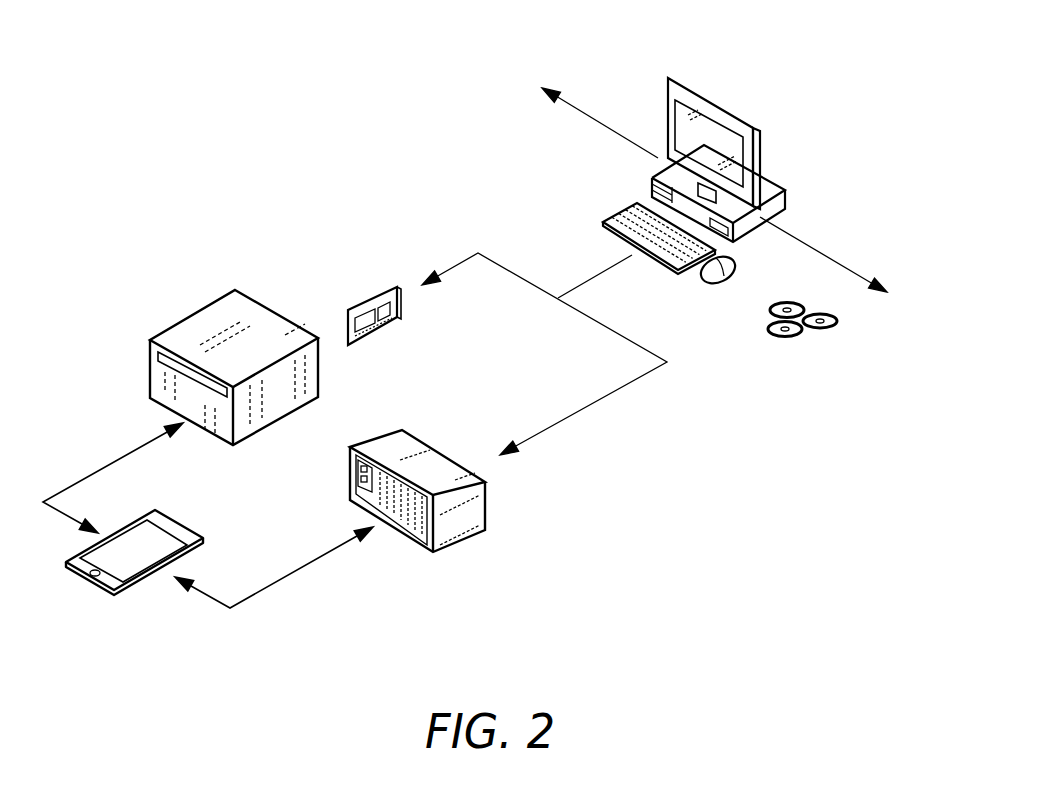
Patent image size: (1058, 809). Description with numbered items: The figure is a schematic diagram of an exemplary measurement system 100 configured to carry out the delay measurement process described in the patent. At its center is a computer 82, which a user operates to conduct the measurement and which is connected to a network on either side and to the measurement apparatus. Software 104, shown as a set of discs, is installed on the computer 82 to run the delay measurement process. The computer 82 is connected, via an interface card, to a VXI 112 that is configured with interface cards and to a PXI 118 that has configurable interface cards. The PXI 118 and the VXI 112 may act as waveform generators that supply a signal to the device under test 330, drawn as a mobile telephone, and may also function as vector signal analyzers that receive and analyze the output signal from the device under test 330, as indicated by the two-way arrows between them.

The system 100 is at (221, 79).
The computer 82 is at (720, 103).
The software 104 is at (788, 340).
The VXI 112 is at (228, 302).
The PXI 118 is at (422, 548).
The Device Under Test (DUT) 330 is at (118, 600).